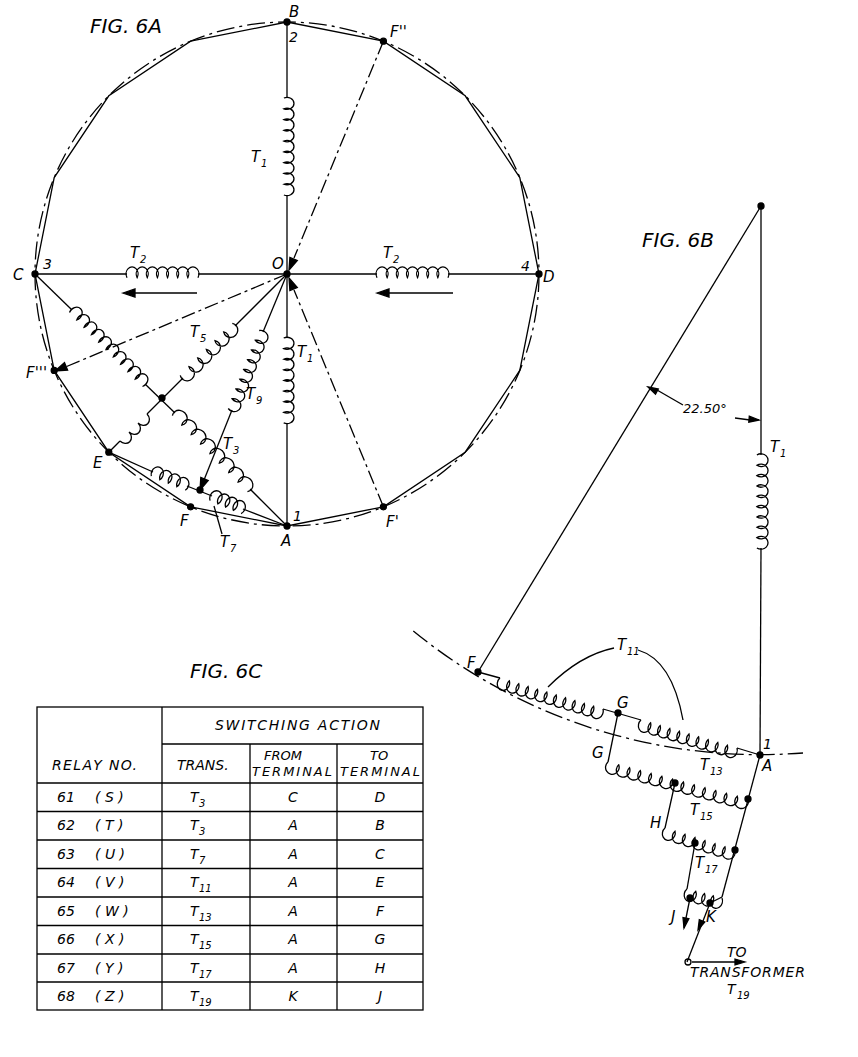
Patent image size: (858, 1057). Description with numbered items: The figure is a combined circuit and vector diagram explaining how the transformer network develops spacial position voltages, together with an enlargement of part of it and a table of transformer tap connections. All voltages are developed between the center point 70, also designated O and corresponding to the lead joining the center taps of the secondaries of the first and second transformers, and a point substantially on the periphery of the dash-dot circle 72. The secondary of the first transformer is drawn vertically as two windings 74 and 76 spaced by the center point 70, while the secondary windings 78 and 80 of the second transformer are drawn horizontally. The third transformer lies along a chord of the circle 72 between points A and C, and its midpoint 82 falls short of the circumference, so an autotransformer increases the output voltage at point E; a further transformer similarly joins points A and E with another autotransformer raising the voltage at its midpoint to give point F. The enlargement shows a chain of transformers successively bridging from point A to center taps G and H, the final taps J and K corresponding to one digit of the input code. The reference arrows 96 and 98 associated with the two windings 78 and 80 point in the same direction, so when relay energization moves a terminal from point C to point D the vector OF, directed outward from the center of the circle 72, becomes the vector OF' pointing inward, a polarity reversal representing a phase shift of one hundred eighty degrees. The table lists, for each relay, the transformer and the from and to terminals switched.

In FIG. 6A, the dash-dot circle 72 is at (509, 147).
In FIG. 6B, the dash-dot circle 72 is at (435, 640).
In FIG. 6A, the winding of transformer T1 secondary 74 is at (281, 137).
In FIG. 6A, the winding of transformer T1 secondary 76 is at (296, 380).
In FIG. 6B, the winding of transformer T1 secondary 76 is at (768, 500).
In FIG. 6A, the secondary winding of transformer T2 78 is at (172, 266).
In FIG. 6A, the secondary winding of transformer T2 80 is at (432, 266).
In FIG. 6A, the midpoint of transformer T3 82 is at (166, 398).
In FIG. 6A, the reference arrow 96 is at (172, 295).
In FIG. 6A, the reference arrow 98 is at (412, 295).
In FIG. 6A, the center point 70 is at (291, 272).
In FIG. 6B, the center point 70 is at (762, 205).